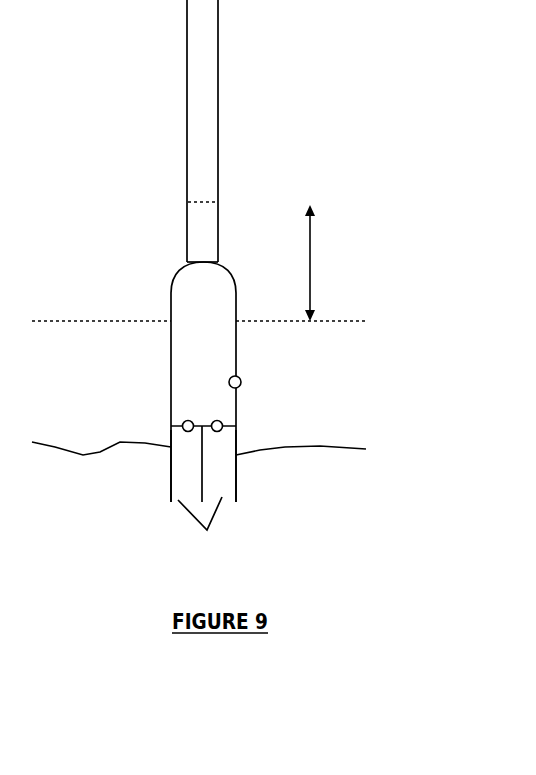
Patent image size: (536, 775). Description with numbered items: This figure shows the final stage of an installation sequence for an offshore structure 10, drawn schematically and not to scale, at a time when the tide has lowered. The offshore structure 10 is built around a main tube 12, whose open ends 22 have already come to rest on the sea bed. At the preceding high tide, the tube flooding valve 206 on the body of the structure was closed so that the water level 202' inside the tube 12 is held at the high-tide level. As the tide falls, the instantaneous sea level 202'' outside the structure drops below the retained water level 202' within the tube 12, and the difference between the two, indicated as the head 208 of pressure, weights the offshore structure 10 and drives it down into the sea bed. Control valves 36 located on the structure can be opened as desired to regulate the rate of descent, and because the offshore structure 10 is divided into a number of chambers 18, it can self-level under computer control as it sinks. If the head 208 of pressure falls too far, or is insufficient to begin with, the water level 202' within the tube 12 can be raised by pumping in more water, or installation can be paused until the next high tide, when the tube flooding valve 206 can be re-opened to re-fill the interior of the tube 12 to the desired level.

The offshore structure 10 is at (126, 92).
The main tube 12 is at (205, 230).
The chambers 18 is at (181, 485).
The open ends 22 is at (200, 527).
The control valves 36 is at (213, 423).
The water level 202' is at (165, 175).
The instantaneous sea level 202'' is at (199, 293).
The tube flooding valve 206 is at (241, 384).
The head of pressure 208 is at (327, 263).